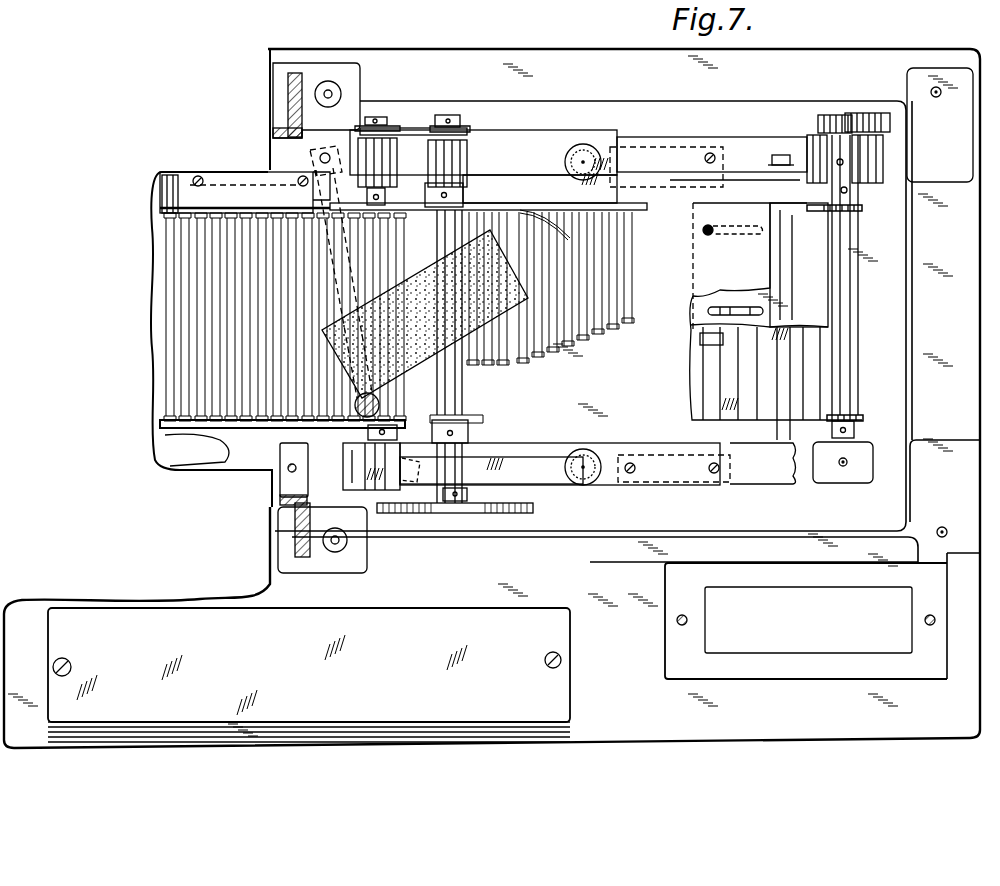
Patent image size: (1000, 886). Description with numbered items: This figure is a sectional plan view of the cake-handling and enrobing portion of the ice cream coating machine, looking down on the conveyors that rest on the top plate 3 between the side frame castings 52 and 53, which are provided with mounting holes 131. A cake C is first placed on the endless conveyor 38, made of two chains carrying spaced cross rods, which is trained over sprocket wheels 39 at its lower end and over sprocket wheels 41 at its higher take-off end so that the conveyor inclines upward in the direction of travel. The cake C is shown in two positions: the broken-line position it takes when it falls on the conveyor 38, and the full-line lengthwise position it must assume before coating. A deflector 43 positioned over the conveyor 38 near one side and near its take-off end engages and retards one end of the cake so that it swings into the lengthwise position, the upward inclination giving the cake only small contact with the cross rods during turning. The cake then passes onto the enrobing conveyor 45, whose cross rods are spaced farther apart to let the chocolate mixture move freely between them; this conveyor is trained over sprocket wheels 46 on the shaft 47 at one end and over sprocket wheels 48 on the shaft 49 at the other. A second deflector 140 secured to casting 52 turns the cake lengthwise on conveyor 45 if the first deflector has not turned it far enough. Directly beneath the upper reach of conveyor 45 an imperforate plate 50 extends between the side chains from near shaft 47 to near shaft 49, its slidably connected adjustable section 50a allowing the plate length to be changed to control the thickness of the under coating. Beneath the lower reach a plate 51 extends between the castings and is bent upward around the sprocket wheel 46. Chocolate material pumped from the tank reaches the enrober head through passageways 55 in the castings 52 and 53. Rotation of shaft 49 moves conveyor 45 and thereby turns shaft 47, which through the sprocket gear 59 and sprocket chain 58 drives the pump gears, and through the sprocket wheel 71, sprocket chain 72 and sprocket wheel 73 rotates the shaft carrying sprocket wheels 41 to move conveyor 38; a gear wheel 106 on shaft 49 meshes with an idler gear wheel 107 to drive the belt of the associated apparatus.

The top plate 3 is at (505, 49).
The mounting holes 131 is at (333, 84).
The endless conveyor 38 is at (259, 428).
The sprocket wheels 39 is at (162, 211).
The sprocket wheels 41 is at (386, 166).
The deflector 43 is at (358, 419).
The enrobing conveyor 45 is at (640, 210).
The sprocket wheels 46 is at (462, 190).
The shaft 47 is at (455, 387).
The sprocket wheels 48 is at (852, 210).
The shaft 49 is at (846, 363).
The imperforate plate 50 is at (556, 423).
The adjustable section 50a is at (815, 248).
The plate 51 is at (512, 178).
The frame casting 52 is at (165, 174).
The frame casting 53 is at (235, 459).
The passageways 55 is at (586, 148).
The sprocket chain 58 is at (503, 513).
The sprocket gear 59 is at (443, 499).
The sprocket wheel 71 is at (458, 114).
The sprocket chain 72 is at (408, 126).
The sprocket wheel 73 is at (377, 117).
The gear wheel 106 is at (832, 114).
The idler gear wheel 107 is at (870, 113).
The second deflector 140 is at (558, 222).
The cake C is at (425, 314).